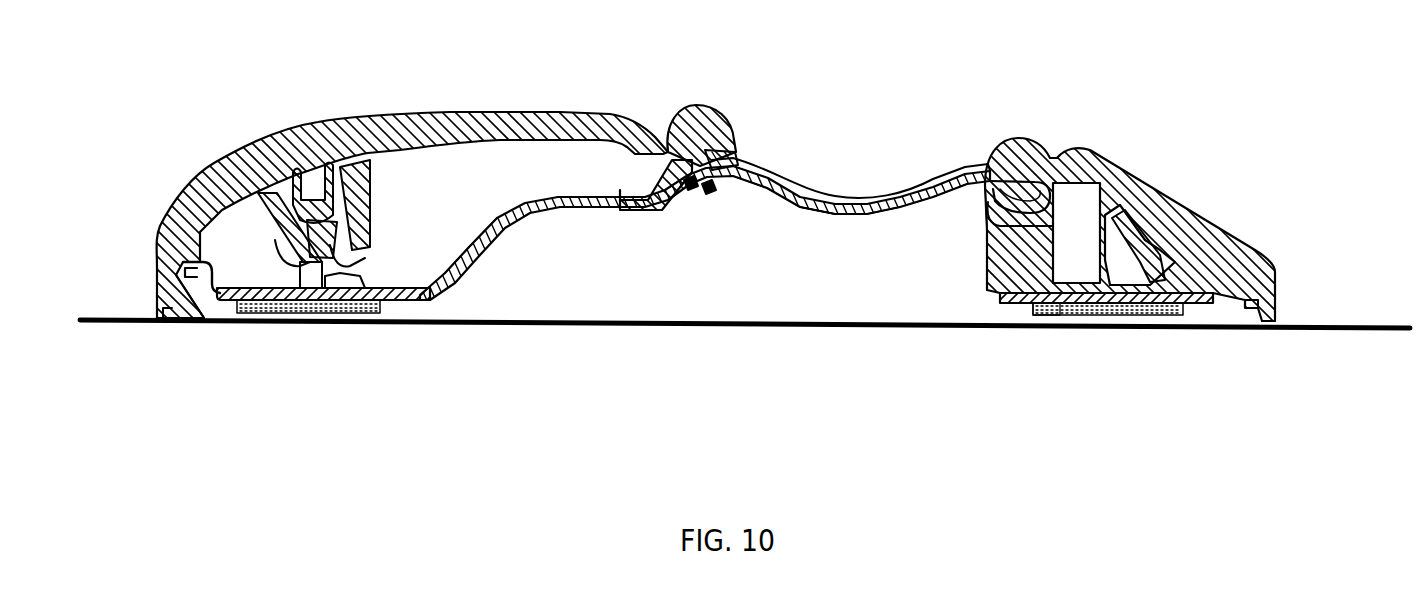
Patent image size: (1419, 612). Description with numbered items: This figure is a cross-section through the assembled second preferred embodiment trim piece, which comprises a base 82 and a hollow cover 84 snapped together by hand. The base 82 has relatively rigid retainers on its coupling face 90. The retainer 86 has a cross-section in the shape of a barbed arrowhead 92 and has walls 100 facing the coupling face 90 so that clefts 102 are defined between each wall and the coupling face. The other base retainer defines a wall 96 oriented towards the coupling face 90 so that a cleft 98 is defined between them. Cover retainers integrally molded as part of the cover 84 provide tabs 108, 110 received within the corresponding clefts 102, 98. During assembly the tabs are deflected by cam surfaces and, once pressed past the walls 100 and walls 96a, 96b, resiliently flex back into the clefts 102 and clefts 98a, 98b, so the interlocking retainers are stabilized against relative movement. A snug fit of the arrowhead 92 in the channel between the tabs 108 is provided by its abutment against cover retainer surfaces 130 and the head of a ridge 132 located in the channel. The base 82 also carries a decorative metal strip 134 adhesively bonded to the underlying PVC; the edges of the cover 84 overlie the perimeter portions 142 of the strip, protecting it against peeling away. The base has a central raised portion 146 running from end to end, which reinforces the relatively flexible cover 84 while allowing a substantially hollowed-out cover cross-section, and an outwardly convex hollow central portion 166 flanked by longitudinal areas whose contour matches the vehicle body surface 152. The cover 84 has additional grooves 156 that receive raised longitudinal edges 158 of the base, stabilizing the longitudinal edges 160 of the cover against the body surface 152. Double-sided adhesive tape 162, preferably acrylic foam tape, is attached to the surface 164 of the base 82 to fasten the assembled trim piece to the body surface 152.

The base 82 is at (465, 290).
The hollow cover 84 is at (452, 112).
The retainer 86 is at (1117, 278).
The coupling face 90 is at (425, 288).
The barbed arrowhead 92 is at (1160, 243).
The wall 96 is at (997, 207).
The wall 96a is at (664, 152).
The wall 96b is at (708, 153).
The cleft 98 is at (988, 218).
The cleft 98a is at (665, 173).
The cleft 98b is at (710, 167).
The wall 100 is at (295, 257).
The cleft 102 is at (342, 275).
The tab 108 is at (300, 264).
The tab 110 is at (688, 186).
The cover retainer surface 130 is at (293, 183).
The ridge 132 is at (317, 183).
The decorative metal strip 134 is at (815, 188).
The perimeter portion 142 is at (982, 180).
The central raised portion 146 is at (518, 223).
The body surface 152 is at (1318, 325).
The groove 156 is at (163, 300).
The raised longitudinal edge 158 is at (195, 290).
The longitudinal edge 160 is at (157, 312).
The double-sided adhesive tape 162 is at (1140, 327).
The surface 164 is at (1040, 327).
The hollow central portion 166 is at (818, 216).